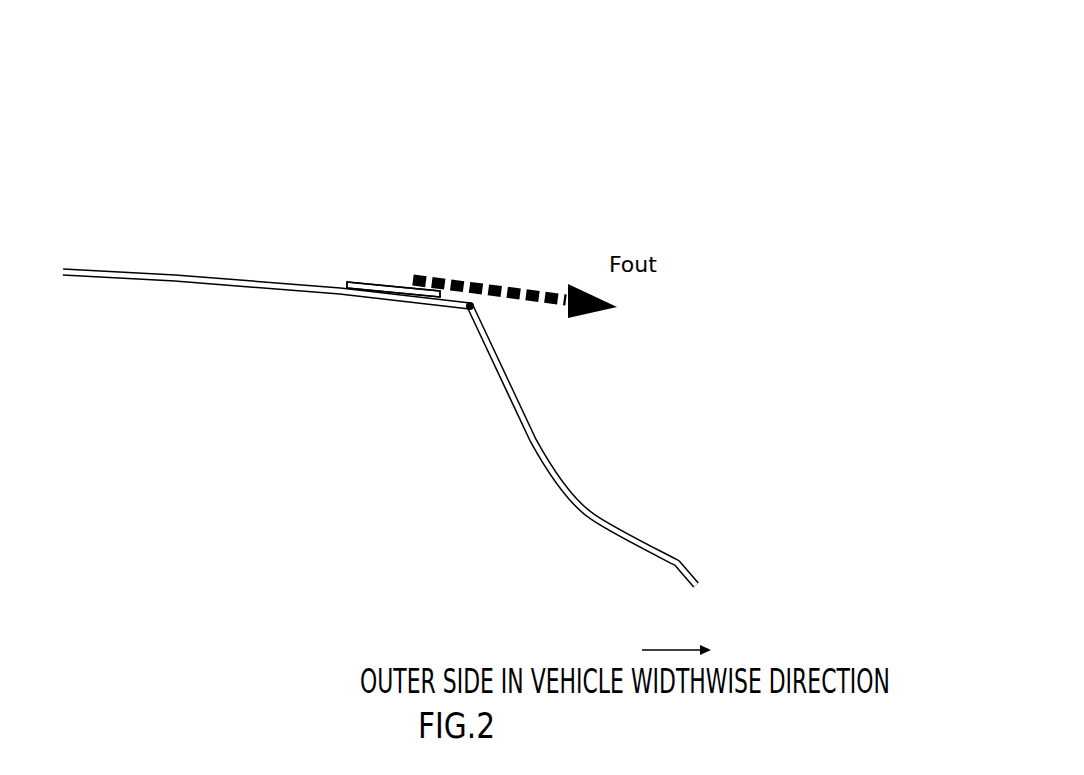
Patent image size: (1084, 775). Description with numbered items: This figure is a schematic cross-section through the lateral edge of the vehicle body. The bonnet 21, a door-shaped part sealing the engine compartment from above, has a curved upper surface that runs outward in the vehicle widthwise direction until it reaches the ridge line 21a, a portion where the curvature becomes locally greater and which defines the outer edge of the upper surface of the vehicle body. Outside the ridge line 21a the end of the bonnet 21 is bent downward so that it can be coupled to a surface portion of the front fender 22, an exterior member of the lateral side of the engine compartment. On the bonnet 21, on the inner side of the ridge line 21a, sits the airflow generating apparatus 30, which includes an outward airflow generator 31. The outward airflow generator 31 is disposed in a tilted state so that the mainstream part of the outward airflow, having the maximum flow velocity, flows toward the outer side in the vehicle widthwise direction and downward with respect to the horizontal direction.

The bonnet 21 is at (175, 278).
The ridge line 21a is at (470, 306).
The front fender 22 is at (677, 563).
The airflow generating apparatus 30 is at (397, 286).
The outward airflow generator 31 is at (393, 289).